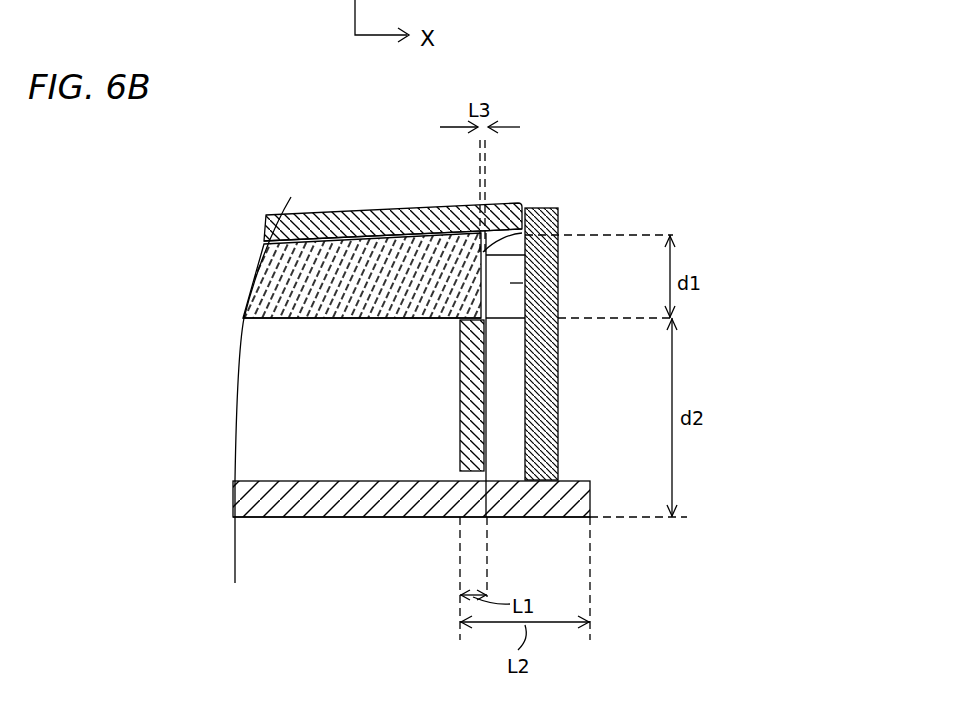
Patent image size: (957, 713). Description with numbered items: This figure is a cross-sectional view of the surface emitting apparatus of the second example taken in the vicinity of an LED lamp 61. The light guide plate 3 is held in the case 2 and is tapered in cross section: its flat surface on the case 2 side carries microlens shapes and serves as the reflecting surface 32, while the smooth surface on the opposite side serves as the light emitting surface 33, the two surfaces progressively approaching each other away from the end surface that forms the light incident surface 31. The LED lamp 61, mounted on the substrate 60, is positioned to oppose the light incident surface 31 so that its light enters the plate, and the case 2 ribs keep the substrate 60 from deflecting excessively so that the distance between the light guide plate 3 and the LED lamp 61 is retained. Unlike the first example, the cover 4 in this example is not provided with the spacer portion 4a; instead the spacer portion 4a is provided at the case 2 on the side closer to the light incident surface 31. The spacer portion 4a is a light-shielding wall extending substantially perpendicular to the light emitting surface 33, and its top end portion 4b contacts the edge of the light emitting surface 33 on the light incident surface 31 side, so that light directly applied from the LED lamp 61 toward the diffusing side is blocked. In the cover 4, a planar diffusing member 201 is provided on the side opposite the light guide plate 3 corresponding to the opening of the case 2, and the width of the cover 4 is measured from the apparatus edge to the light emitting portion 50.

The case 2 is at (303, 216).
The light guide plate 3 is at (247, 287).
The cover 4 is at (572, 508).
The spacer portion 4a is at (483, 440).
The top end portion 4b is at (486, 311).
The light incident surface 31 is at (526, 208).
The reflecting surface 32 is at (337, 240).
The light emitting surface 33 is at (283, 318).
The light emitting portion 50 is at (387, 519).
The substrate 60 is at (558, 448).
The LED lamp 61 is at (523, 283).
The diffusing member 201 is at (294, 518).